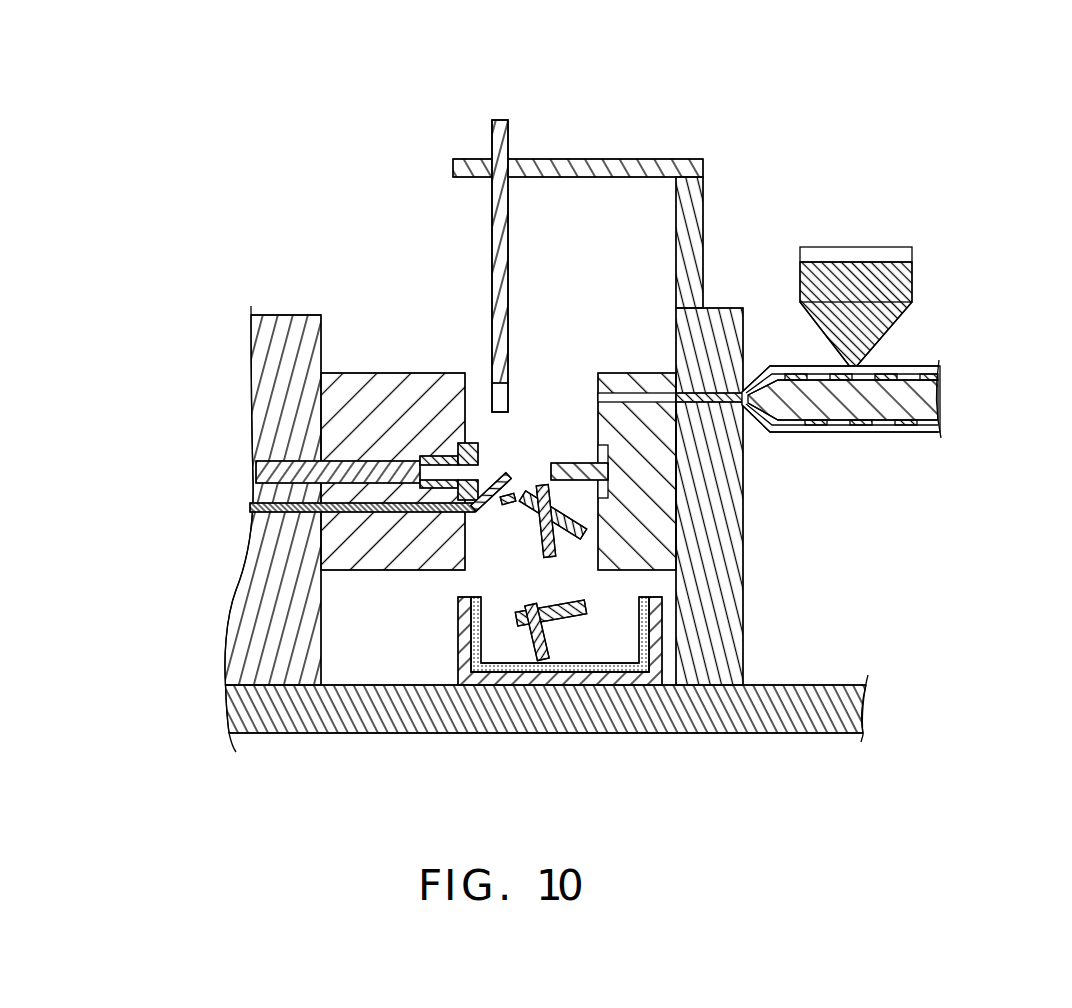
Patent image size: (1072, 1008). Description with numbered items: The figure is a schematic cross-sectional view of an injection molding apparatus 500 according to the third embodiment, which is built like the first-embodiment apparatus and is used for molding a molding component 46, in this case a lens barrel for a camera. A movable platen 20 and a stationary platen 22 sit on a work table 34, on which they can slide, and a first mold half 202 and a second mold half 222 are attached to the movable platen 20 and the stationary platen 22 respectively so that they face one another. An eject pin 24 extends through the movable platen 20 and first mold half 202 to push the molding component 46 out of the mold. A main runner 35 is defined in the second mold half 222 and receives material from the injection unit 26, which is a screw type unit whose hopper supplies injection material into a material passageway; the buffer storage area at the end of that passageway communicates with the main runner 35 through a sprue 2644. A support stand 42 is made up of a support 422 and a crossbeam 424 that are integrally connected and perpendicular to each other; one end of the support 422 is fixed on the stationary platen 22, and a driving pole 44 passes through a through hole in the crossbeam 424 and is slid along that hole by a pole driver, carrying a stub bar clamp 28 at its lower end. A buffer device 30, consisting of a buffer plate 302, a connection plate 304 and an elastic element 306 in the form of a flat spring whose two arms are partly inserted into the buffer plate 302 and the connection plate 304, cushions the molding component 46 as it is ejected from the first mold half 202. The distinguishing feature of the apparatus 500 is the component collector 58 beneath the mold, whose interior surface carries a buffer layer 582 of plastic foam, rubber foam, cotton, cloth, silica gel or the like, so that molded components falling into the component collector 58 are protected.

The injection molding apparatus 500 is at (542, 74).
The movable platen 20 is at (276, 351).
The first mold half 202 is at (343, 544).
The stationary platen 22 is at (713, 643).
The second mold half 222 is at (655, 548).
The eject pin 24 is at (274, 474).
The injection unit 26 is at (888, 368).
The sprue 2644 is at (748, 430).
The stub bar clamp 28 is at (500, 390).
The buffer device 30 is at (399, 653).
The buffer plate 302 is at (511, 503).
The connection plate 304 is at (420, 508).
The elastic element 306 is at (468, 510).
The work table 34 is at (843, 718).
The main runner 35 is at (623, 397).
The support stand 42 is at (643, 203).
The support 422 is at (688, 215).
The crossbeam 424 is at (643, 168).
The driving pole 44 is at (498, 140).
The molding component 46 is at (460, 457).
The component collector 58 is at (569, 691).
The buffer layer 582 is at (573, 668).